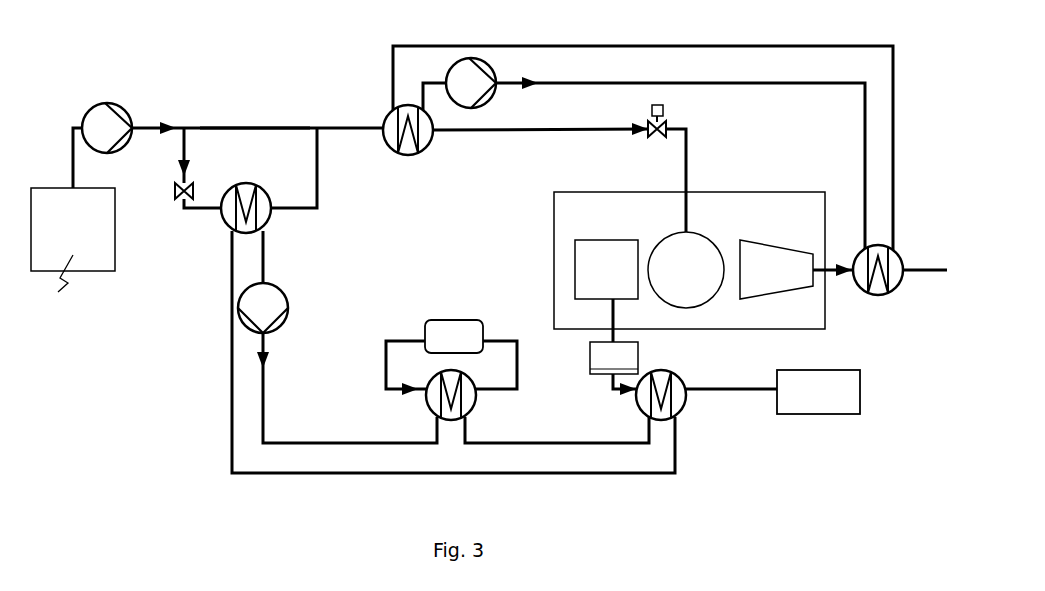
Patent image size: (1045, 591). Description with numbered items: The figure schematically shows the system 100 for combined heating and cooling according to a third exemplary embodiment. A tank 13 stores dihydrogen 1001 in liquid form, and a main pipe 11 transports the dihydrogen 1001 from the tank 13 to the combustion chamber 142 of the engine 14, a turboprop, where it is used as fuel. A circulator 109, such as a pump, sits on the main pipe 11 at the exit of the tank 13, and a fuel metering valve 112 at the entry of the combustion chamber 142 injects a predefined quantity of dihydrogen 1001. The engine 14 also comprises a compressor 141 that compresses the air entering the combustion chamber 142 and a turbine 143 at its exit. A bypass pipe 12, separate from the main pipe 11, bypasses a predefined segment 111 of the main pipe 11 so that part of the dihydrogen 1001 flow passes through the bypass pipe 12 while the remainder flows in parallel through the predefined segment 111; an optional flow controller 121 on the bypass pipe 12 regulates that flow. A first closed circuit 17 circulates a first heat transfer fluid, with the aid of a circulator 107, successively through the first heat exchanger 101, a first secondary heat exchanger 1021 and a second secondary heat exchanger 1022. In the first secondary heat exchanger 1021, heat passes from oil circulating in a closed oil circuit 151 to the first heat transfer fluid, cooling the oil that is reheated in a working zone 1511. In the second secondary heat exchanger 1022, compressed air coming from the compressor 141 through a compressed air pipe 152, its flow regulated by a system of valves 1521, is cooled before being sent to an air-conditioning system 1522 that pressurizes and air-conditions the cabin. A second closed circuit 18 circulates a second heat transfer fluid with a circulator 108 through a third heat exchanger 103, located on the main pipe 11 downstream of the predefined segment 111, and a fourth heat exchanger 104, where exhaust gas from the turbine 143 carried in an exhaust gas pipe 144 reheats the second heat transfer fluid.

The system for combined heating and cooling 100 is at (150, 44).
The circulator 109 is at (93, 108).
The main pipe 11 is at (150, 126).
The predefined segment 111 is at (237, 127).
The bypass pipe 12 is at (317, 197).
The flow controller 121 is at (175, 190).
The first heat exchanger 101 is at (268, 219).
The dihydrogen 1001 is at (59, 285).
The tank 13 is at (112, 272).
The circulator 107 is at (283, 325).
The first closed circuit 17 is at (230, 372).
The circulator 108 is at (490, 98).
The third heat exchanger 103 is at (423, 153).
The second closed circuit 18 is at (690, 46).
The fuel metering valve 112 is at (666, 110).
The engine 14 is at (689, 260).
The compressor 141 is at (606, 269).
The combustion chamber 142 is at (686, 270).
The turbine 143 is at (796, 269).
The fourth heat exchanger 104 is at (872, 295).
The exhaust gas pipe 144 is at (926, 278).
The oil circuit 151 is at (404, 340).
The working zone 1511 is at (454, 336).
The system of valves 1521 is at (614, 347).
The first secondary heat exchanger 1021 is at (478, 404).
The second secondary heat exchanger 1022 is at (688, 404).
The compressed air pipe 152 is at (712, 388).
The air-conditioning system 1522 is at (818, 392).